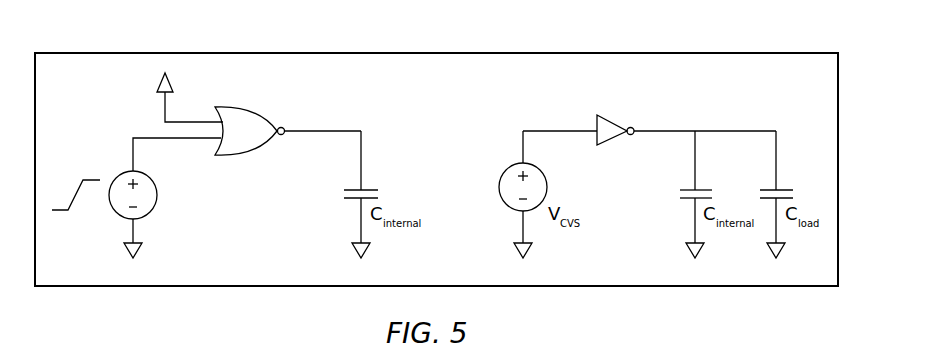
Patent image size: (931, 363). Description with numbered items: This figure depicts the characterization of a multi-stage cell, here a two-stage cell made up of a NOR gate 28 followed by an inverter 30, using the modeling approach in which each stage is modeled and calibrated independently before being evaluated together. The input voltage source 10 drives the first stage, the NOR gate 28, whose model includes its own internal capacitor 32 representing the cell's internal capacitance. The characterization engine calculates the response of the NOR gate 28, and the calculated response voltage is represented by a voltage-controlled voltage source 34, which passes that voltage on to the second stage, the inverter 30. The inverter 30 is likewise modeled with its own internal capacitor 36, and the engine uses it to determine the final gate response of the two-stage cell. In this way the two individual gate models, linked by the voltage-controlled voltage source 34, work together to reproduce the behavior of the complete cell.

The input voltage source 10 is at (157, 190).
The NOR gate 28 is at (276, 97).
The inverter 30 is at (618, 114).
The internal capacitor 32 is at (366, 186).
The voltage-controlled voltage source 34 is at (547, 181).
The internal capacitor 36 is at (685, 204).